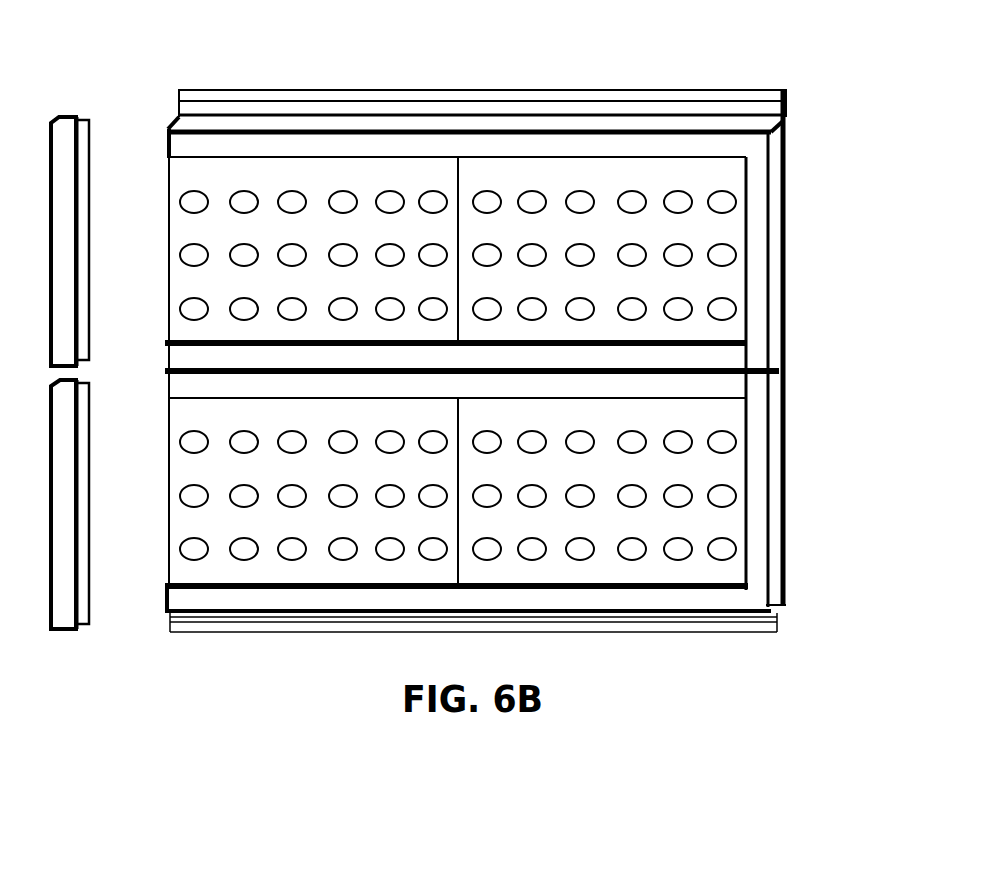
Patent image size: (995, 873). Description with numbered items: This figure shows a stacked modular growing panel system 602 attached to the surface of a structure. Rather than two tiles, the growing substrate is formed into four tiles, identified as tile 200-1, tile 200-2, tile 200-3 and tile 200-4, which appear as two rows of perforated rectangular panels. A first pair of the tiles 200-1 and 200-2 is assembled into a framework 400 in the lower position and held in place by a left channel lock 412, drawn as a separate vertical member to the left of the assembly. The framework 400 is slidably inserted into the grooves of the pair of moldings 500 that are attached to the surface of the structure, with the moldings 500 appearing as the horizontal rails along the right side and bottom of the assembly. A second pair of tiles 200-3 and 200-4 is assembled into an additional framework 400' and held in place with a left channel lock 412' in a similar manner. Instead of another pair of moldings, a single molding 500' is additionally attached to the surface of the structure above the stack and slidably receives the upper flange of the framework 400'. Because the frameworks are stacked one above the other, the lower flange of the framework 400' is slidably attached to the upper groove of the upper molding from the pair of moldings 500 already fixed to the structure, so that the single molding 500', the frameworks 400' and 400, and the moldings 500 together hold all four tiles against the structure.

The stacked modular growing panel system 602 is at (244, 46).
The left channel lock 412' is at (127, 205).
The left channel lock 412 is at (117, 538).
The additional framework 400' is at (475, 103).
The framework 400 is at (472, 526).
The single molding 500' is at (482, 77).
The pair of moldings 500 is at (527, 350).
The tile 200-1 is at (313, 486).
The tile 200-2 is at (604, 486).
The tile 200-3 is at (313, 246).
The tile 200-4 is at (604, 246).